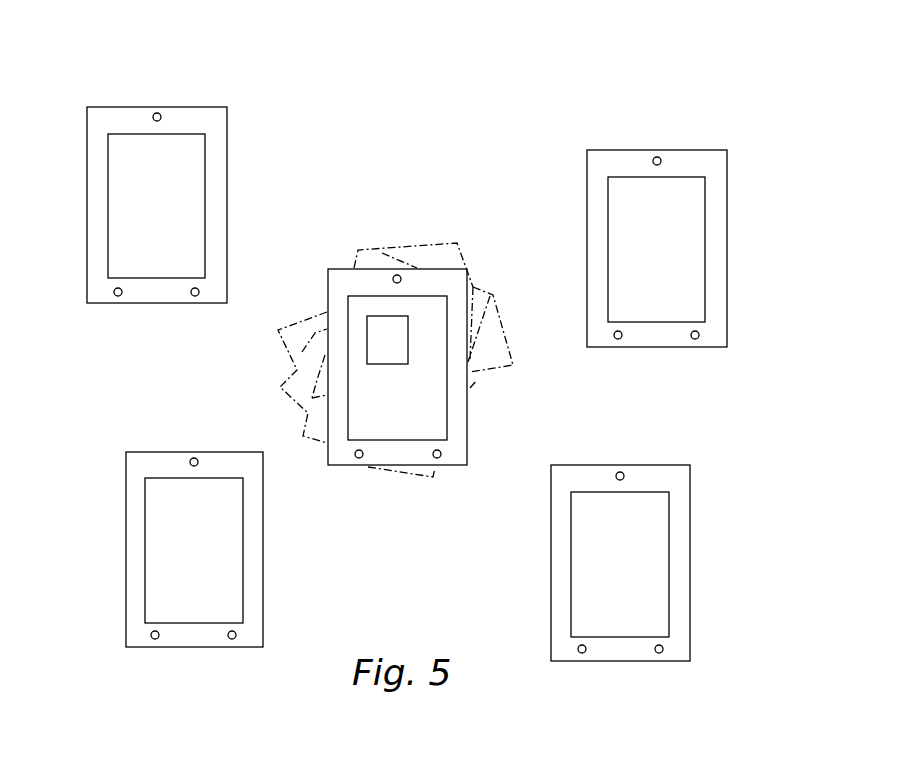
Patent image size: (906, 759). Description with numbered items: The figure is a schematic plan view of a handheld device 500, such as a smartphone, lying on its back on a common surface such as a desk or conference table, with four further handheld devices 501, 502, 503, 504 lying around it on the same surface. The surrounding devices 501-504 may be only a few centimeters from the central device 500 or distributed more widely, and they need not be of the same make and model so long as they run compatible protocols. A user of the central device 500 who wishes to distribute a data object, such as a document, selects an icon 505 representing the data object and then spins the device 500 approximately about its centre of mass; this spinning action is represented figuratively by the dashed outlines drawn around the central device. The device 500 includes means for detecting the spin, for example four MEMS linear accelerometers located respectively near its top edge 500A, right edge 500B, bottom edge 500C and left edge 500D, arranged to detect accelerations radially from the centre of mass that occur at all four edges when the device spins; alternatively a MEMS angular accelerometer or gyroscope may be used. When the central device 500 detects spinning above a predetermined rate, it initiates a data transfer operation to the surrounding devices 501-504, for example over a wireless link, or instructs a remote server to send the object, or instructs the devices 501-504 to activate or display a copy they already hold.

The handheld device 500 is at (457, 410).
The top edge 500A is at (376, 268).
The right edge 500B is at (467, 445).
The bottom edge 500C is at (372, 467).
The left edge 500D is at (327, 392).
The further handheld device 501 is at (193, 120).
The further handheld device 502 is at (690, 168).
The further handheld device 503 is at (133, 548).
The further handheld device 504 is at (683, 567).
The icon 505 is at (385, 338).